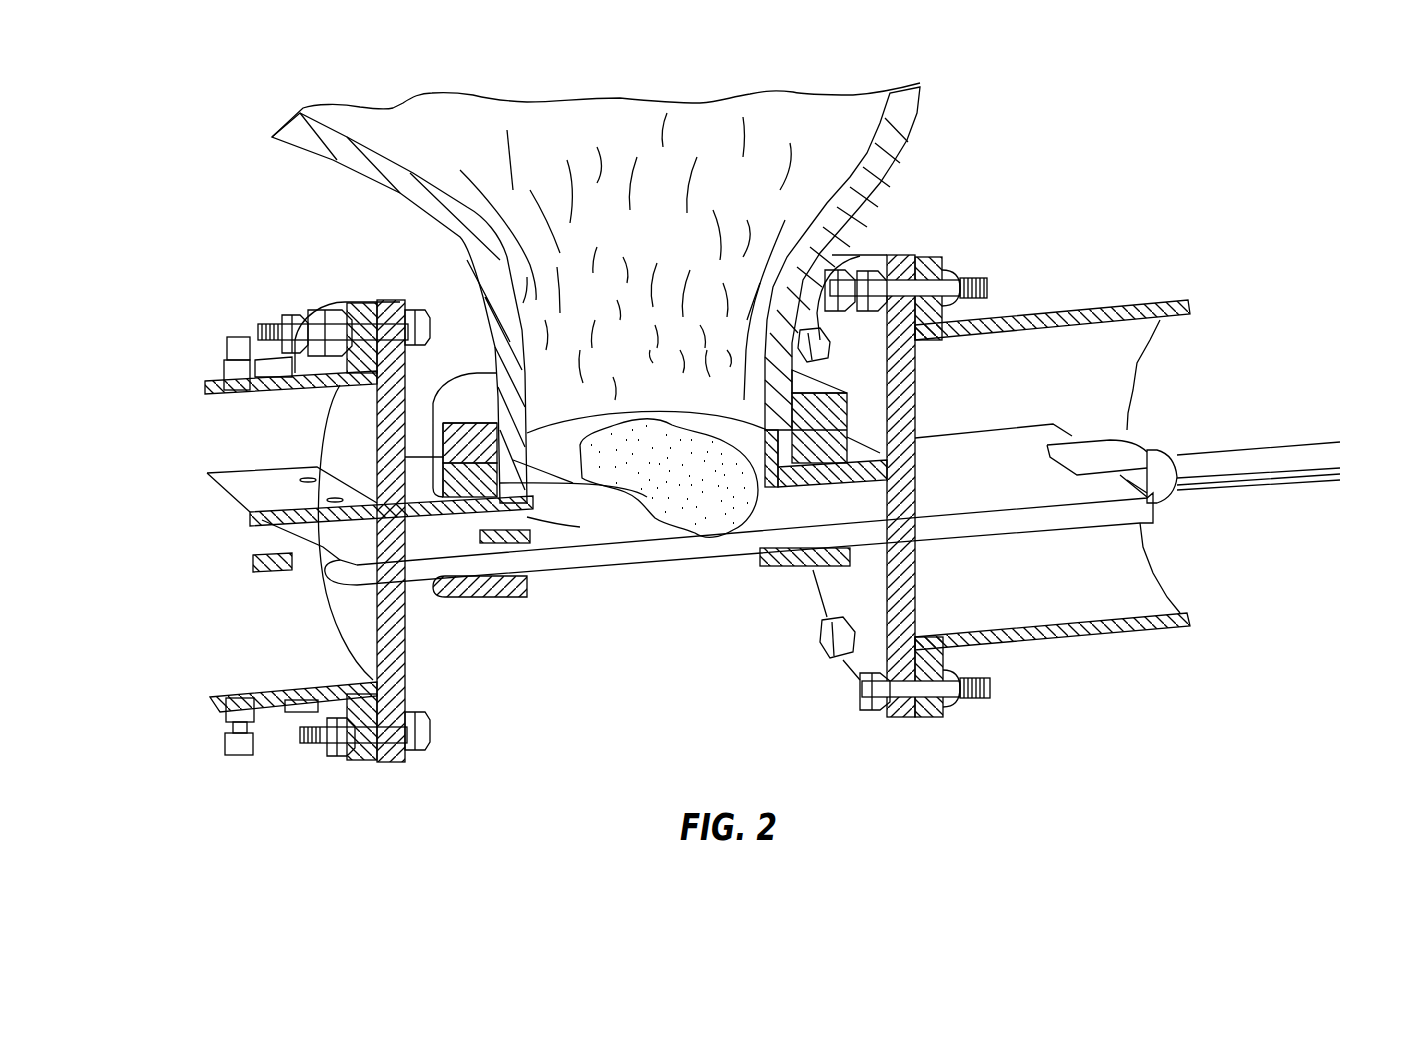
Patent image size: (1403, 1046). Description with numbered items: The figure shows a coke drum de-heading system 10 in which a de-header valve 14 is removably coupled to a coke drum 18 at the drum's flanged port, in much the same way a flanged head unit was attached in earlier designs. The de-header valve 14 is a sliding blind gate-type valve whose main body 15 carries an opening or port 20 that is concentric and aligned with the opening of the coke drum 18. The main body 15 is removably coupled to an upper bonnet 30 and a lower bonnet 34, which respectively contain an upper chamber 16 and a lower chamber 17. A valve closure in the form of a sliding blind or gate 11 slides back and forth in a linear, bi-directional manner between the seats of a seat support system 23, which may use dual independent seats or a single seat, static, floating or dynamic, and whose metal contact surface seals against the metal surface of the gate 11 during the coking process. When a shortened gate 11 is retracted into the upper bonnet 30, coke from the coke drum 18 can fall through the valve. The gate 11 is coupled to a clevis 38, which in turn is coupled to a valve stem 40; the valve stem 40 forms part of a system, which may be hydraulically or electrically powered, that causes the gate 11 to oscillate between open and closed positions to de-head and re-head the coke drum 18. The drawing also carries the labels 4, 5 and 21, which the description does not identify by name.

The de-heading system 10 is at (1193, 187).
The gas flow 4 is at (790, 160).
The coke drum 18 is at (913, 132).
The upper bonnet 30 is at (1017, 310).
The upper chamber 16 is at (253, 421).
The lower chamber 17 is at (245, 667).
The lower bonnet 34 is at (224, 377).
The main body 15 is at (407, 673).
The de-header valve 14 is at (1040, 723).
The opening or port 20 is at (560, 590).
The sealing ring 21 is at (583, 530).
The seat support system 23 is at (540, 527).
The sample material 5 is at (697, 517).
The gate 11 is at (713, 557).
The clevis 38 is at (1112, 448).
The valve stem 40 is at (1270, 462).